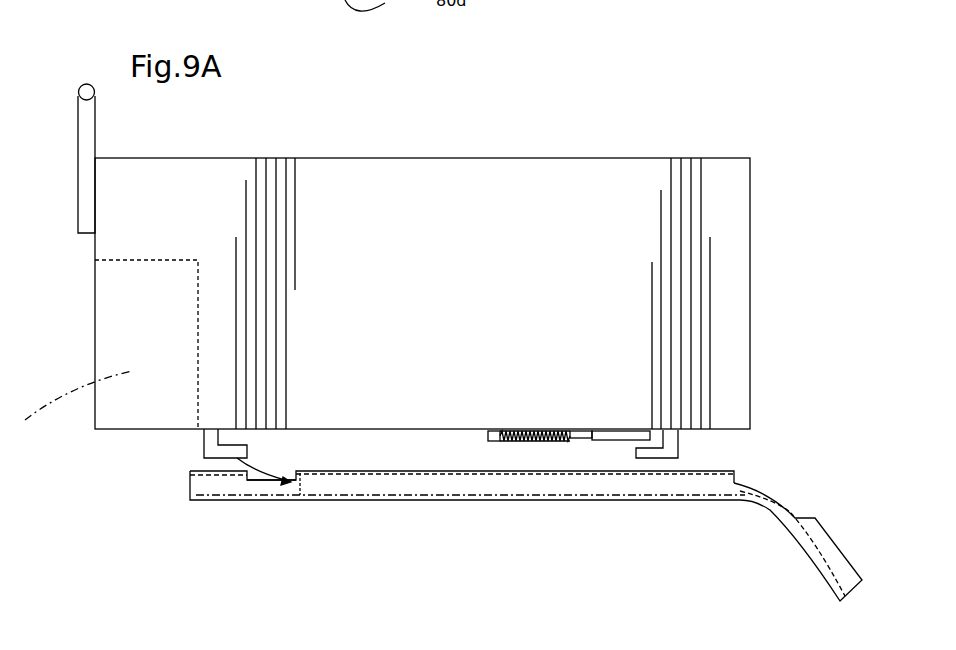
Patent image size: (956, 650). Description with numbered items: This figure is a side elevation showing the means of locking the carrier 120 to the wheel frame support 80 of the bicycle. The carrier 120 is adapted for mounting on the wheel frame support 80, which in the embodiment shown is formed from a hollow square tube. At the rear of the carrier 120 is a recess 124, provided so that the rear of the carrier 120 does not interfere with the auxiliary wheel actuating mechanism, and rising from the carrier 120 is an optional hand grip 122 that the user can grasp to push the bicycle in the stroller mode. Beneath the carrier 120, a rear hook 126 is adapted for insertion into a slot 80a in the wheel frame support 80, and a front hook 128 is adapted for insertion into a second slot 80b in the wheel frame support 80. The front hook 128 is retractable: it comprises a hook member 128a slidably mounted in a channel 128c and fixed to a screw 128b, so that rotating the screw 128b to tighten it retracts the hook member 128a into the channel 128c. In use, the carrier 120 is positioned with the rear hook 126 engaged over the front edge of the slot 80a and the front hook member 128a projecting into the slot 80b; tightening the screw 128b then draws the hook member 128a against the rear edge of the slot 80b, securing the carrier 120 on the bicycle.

The carrier 120 is at (643, 151).
The hand grip 122 is at (86, 84).
The recess 124 is at (102, 363).
The rear hook 126 is at (210, 458).
The wheel frame support 80 is at (517, 507).
The slot 80a is at (300, 478).
The slot 80b is at (773, 498).
The front hook 128 is at (590, 444).
The hook member 128a is at (678, 446).
The screw 128b is at (538, 430).
The channel 128c is at (620, 436).